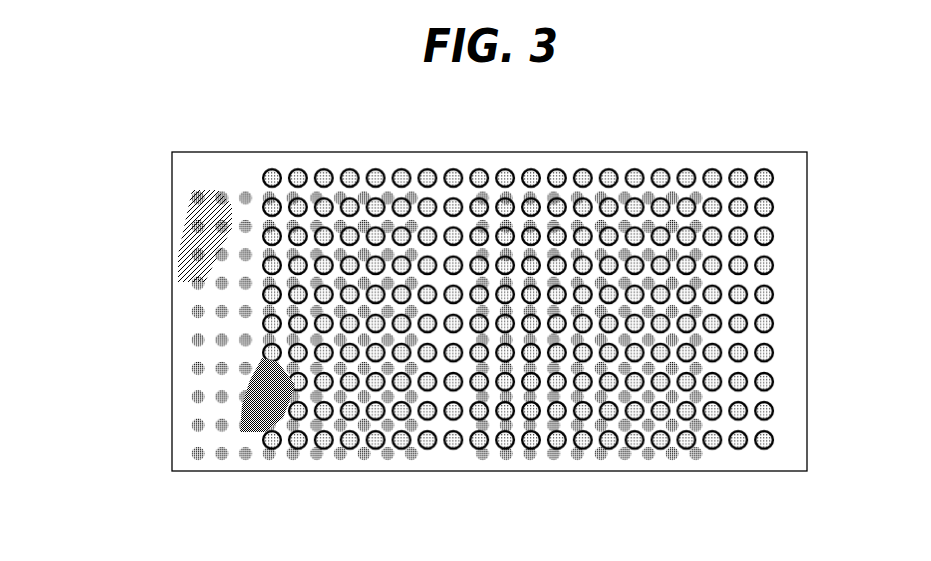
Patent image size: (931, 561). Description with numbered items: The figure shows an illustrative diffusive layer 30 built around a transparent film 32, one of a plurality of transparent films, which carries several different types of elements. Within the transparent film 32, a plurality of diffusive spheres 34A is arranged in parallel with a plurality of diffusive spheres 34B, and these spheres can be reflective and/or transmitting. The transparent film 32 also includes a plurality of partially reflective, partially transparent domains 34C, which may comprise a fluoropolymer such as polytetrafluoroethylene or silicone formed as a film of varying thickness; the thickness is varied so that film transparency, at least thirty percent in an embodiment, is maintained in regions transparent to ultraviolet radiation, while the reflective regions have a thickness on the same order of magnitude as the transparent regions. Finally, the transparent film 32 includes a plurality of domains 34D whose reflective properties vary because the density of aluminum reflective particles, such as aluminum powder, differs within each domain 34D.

The diffusive layer 30 is at (134, 162).
The transparent film 32 is at (262, 153).
The diffusive spheres 34A is at (592, 172).
The diffusive spheres 34B is at (192, 338).
The partially reflective, partially transparent domains 34C is at (182, 249).
The domains with variable reflective properties 34D is at (242, 437).